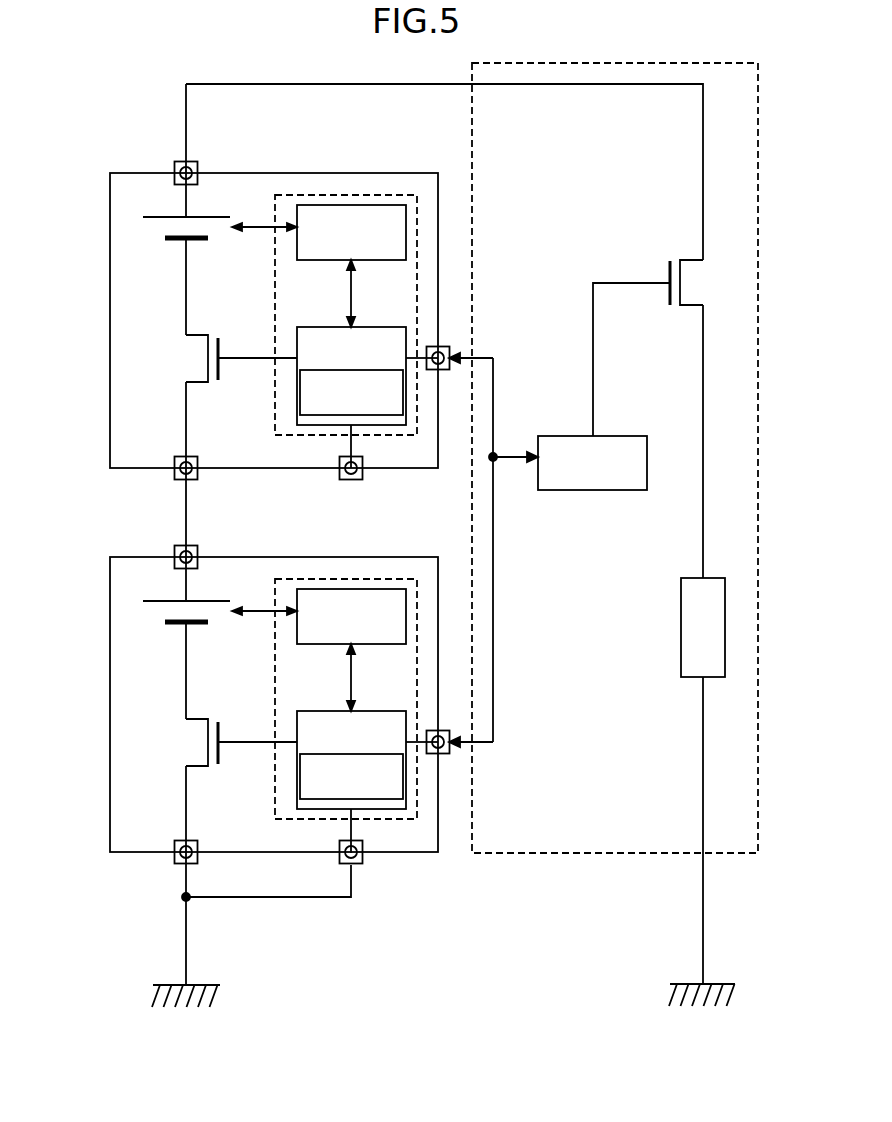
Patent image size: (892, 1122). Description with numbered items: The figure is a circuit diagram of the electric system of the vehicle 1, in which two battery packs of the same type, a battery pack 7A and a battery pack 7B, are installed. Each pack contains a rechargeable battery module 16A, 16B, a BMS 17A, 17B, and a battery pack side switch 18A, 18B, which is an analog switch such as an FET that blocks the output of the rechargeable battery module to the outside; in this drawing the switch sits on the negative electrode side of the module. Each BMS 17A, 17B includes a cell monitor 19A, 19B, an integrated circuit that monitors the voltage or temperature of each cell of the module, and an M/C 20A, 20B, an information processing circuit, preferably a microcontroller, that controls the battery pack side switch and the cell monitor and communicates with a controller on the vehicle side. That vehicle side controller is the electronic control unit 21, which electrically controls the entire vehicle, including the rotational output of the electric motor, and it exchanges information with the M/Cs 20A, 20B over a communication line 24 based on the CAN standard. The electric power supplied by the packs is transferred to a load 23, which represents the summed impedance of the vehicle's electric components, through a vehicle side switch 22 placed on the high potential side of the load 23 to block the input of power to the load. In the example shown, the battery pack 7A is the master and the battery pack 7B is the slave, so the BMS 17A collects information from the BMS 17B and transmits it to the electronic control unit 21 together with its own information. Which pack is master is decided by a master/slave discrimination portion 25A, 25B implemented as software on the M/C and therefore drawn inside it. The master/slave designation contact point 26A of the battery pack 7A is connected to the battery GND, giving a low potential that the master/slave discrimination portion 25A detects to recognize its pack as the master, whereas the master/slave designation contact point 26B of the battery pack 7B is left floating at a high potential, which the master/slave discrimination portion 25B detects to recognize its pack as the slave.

The vehicle 1 is at (758, 543).
The battery pack 7A is at (110, 824).
The battery pack 7B is at (110, 440).
The rechargeable battery module 16A is at (170, 631).
The rechargeable battery module 16B is at (170, 247).
The BMS 17A is at (273, 677).
The BMS 17B is at (273, 293).
The battery pack side switch 18A is at (197, 746).
The battery pack side switch 18B is at (197, 362).
The cell monitor 19A is at (335, 646).
The cell monitor 19B is at (335, 262).
The M/C 20A is at (382, 709).
The M/C 20B is at (382, 325).
The ECU 21 is at (575, 493).
The vehicle side switch 22 is at (675, 255).
The load 23 is at (693, 677).
The communication line 24 is at (493, 668).
The master/slave discrimination portion 25A is at (383, 799).
The master/slave discrimination portion 25B is at (383, 415).
The master/slave designation contact point 26A is at (355, 865).
The master/slave designation contact point 26B is at (358, 480).